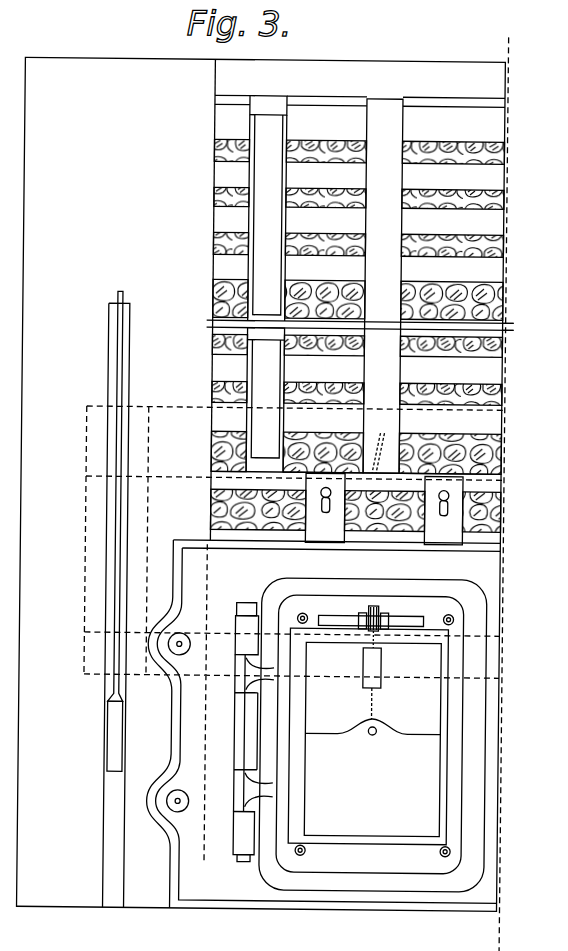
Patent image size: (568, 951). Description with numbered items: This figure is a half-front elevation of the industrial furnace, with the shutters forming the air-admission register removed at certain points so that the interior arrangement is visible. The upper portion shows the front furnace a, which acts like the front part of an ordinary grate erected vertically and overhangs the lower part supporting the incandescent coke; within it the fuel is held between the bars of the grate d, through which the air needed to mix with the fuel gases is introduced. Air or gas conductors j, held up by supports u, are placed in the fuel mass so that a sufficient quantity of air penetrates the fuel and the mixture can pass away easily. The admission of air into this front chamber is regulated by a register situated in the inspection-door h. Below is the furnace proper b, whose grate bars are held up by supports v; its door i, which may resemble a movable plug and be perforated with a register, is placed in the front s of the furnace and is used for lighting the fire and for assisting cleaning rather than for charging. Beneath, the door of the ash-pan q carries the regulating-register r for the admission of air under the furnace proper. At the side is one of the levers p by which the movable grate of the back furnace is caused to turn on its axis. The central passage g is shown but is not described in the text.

The front furnace a is at (212, 244).
The furnace proper b is at (212, 508).
The grate d is at (357, 306).
The central flue g is at (383, 286).
The inspection-door h is at (266, 284).
The door i is at (443, 511).
The air or gas conductors j is at (502, 322).
The levers p is at (121, 378).
The ash-pan q is at (360, 735).
The regulating-register r is at (372, 739).
The front s is at (323, 726).
The supports u is at (212, 322).
The supports v is at (325, 507).